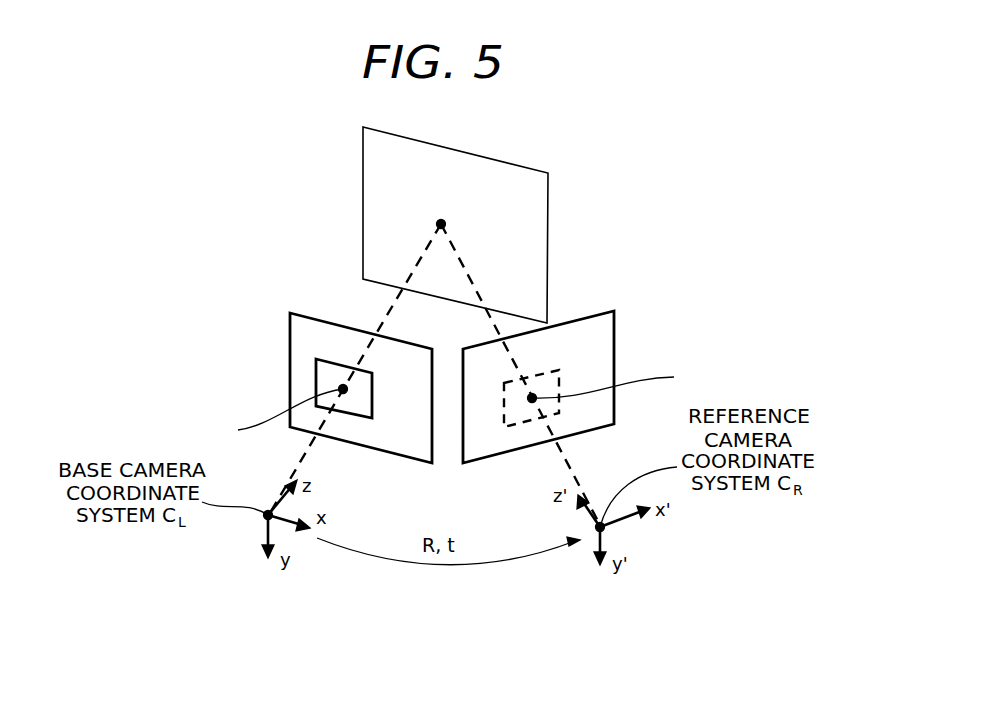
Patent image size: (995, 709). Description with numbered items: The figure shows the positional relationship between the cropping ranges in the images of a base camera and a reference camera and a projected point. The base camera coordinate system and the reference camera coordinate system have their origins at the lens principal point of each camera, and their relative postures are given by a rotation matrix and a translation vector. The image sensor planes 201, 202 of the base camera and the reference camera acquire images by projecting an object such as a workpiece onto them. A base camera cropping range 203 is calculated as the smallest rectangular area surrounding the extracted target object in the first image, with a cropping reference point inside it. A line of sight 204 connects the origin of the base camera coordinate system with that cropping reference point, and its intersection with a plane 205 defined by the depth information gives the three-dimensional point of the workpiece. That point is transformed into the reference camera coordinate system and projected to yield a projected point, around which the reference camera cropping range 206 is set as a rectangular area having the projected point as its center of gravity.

The image sensor plane of the base camera 201 is at (290, 336).
The image sensor plane of the reference camera 202 is at (614, 330).
The base camera cropping range 203 is at (316, 382).
The line of sight 204 is at (393, 303).
The plane 205 is at (363, 210).
The reference camera cropping range 206 is at (559, 379).